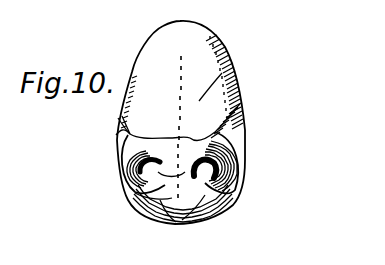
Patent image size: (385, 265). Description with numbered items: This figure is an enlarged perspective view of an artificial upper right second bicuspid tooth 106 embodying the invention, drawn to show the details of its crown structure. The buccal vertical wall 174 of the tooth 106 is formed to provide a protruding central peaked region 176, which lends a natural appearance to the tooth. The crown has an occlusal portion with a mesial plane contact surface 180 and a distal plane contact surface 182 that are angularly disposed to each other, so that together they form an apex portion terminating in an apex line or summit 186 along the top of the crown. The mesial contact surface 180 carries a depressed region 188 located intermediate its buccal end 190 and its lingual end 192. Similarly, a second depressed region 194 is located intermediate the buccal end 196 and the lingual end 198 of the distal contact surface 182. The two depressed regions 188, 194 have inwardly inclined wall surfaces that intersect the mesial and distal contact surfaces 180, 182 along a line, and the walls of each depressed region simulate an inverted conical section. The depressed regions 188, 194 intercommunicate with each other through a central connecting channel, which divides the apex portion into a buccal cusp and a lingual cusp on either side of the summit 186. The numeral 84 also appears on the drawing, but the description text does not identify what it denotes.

The upper right second bicuspid tooth 106 is at (118, 132).
The buccal vertical wall 174 is at (232, 70).
The protruding central peaked region 176 is at (174, 125).
The buccal end 190 is at (121, 117).
The buccal end 196 is at (239, 106).
The second depressed region 194 is at (238, 196).
The depressed region 188 is at (133, 198).
The mesial plane contact surface 180 is at (147, 214).
The distal plane contact surface 182 is at (203, 216).
The lingual end 198 is at (203, 222).
The lingual end 192 is at (153, 224).
The columella base 84 is at (168, 223).
The apex line or summit 186 is at (183, 222).